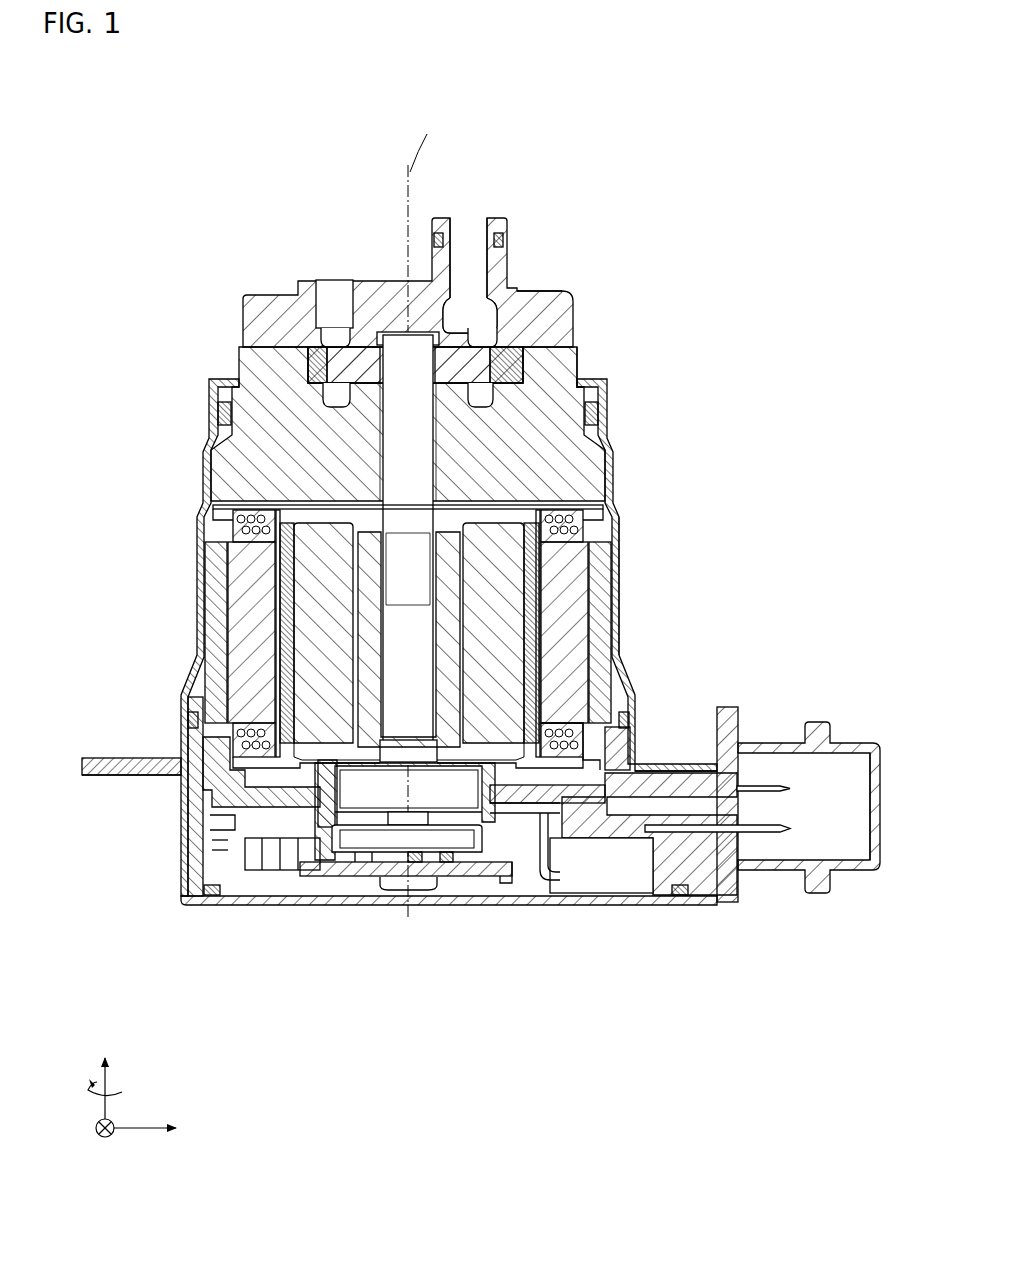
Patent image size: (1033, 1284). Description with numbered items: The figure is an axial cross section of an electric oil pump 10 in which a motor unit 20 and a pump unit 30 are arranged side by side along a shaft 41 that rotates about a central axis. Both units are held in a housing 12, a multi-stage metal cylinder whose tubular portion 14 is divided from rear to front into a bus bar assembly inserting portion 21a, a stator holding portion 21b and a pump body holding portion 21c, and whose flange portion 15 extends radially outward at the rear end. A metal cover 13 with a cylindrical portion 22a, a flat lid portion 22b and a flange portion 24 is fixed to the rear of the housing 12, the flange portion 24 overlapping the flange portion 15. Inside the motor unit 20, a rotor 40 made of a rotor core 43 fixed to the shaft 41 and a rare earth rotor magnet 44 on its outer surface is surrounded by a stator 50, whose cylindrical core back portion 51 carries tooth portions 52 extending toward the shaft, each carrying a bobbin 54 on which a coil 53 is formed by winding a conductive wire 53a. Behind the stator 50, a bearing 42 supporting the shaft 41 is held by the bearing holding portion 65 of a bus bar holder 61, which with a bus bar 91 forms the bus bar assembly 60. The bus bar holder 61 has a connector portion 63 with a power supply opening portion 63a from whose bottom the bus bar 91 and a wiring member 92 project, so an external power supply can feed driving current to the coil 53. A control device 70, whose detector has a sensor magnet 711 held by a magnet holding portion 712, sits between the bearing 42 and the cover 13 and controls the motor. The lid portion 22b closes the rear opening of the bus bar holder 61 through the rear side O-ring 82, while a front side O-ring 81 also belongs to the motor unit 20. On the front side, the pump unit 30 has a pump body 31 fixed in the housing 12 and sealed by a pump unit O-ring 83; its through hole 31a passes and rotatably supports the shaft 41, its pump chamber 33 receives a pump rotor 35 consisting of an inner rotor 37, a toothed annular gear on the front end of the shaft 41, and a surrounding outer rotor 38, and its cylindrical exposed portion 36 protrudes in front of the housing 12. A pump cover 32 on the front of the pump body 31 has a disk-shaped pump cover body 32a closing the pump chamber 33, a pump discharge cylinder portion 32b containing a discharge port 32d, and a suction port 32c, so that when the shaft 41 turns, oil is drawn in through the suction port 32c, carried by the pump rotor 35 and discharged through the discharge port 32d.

The electric oil pump 10 is at (627, 134).
The housing 12 is at (620, 418).
The cover 13 is at (198, 910).
The tubular portion 14 is at (606, 562).
The flange portion 15 is at (95, 757).
The motor unit 20 is at (170, 640).
The bus bar assembly inserting portion 21a is at (640, 742).
The stator holding portion 21b is at (621, 557).
The pump body holding portion 21c is at (613, 481).
The cylindrical portion 22a is at (180, 852).
The lid portion 22b is at (280, 906).
The flange portion 24 is at (95, 777).
The pump unit 30 is at (170, 412).
The pump body 31 is at (600, 351).
The through hole 31a is at (432, 453).
The pump cover 32 is at (571, 279).
The pump cover body 32a is at (558, 317).
The pump discharge cylinder portion 32b is at (481, 219).
The suction port 32c is at (323, 290).
The discharge port 32d is at (478, 270).
The pump chamber 33 is at (578, 345).
The pump rotor 35 is at (170, 330).
The exposed portion 36 is at (579, 368).
The inner rotor 37 is at (330, 360).
The outer rotor 38 is at (330, 376).
The rotor 40 is at (548, 642).
The shaft 41 is at (400, 360).
The bearing 42 is at (370, 792).
The rotor core 43 is at (515, 687).
The rotor magnet 44 is at (545, 622).
The stator 50 is at (616, 540).
The core back portion 51 is at (216, 605).
The tooth portions 52 is at (246, 583).
The coil 53 is at (602, 735).
The conductive wire 53a is at (568, 723).
The bobbin 54 is at (560, 735).
The bus bar assembly 60 is at (814, 662).
The bus bar holder 61 is at (727, 910).
The connector portion 63 is at (845, 741).
The power supply opening portion 63a is at (846, 856).
The bearing holding portion 65 is at (533, 888).
The control device 70 is at (488, 885).
The sensor magnet 711 is at (386, 847).
The magnet holding portion 712 is at (421, 813).
The front side O-ring 81 is at (190, 718).
The rear side O-ring 82 is at (213, 896).
The pump unit O-ring 83 is at (608, 411).
The bus bar 91 is at (761, 785).
The wiring member 92 is at (768, 833).